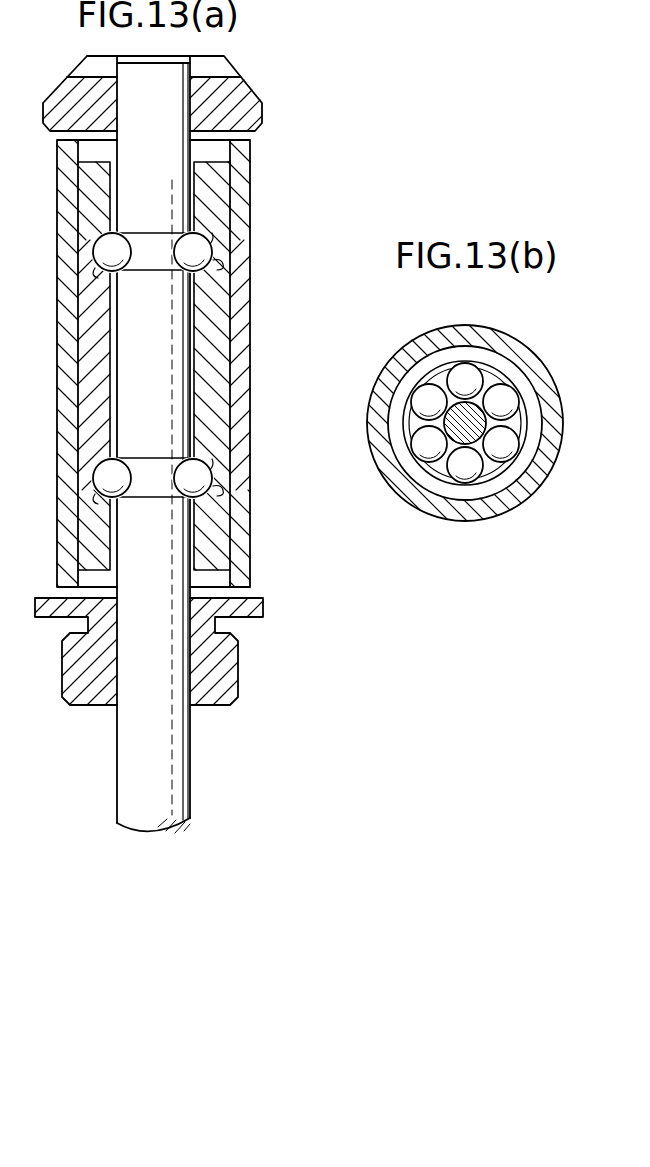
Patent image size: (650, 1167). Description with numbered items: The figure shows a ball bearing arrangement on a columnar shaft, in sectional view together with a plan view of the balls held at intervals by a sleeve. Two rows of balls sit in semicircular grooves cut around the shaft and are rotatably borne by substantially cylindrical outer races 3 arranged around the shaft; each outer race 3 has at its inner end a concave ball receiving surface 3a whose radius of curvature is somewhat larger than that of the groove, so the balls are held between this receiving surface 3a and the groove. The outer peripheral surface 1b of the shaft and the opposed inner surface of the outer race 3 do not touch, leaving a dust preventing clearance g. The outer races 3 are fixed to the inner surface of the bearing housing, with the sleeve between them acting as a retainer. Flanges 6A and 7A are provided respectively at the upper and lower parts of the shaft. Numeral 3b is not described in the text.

The outer peripheral surface of the shaft 1b is at (113, 566).
The outer race 3 is at (213, 170).
The ball receiving surface 3a is at (217, 270).
The bore of inner sleeve 3b is at (110, 197).
The flange 6A is at (261, 107).
The flange 7A is at (238, 665).
The dust preventing clearance g is at (113, 162).